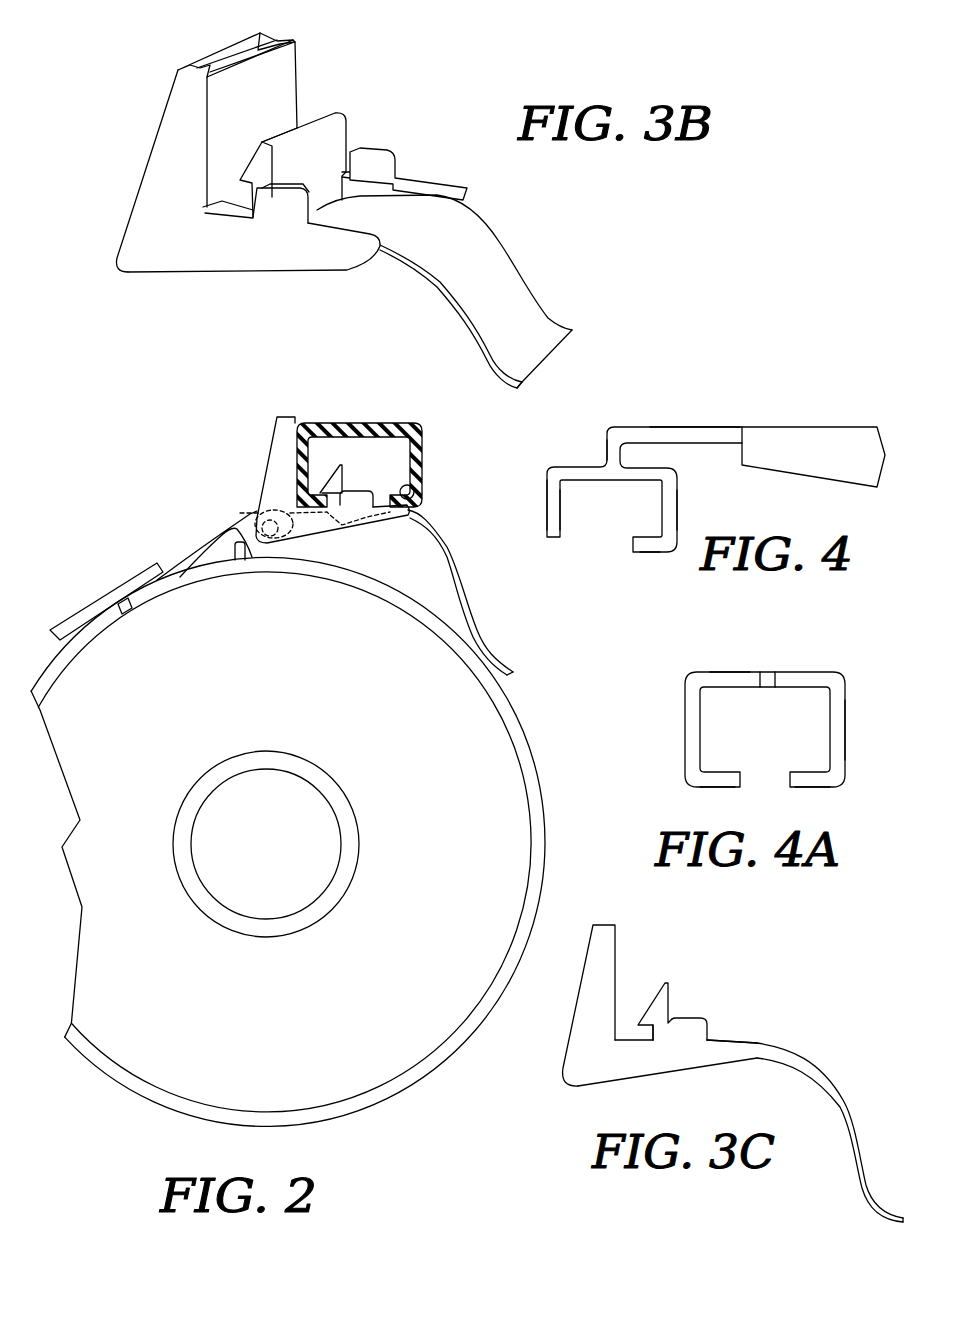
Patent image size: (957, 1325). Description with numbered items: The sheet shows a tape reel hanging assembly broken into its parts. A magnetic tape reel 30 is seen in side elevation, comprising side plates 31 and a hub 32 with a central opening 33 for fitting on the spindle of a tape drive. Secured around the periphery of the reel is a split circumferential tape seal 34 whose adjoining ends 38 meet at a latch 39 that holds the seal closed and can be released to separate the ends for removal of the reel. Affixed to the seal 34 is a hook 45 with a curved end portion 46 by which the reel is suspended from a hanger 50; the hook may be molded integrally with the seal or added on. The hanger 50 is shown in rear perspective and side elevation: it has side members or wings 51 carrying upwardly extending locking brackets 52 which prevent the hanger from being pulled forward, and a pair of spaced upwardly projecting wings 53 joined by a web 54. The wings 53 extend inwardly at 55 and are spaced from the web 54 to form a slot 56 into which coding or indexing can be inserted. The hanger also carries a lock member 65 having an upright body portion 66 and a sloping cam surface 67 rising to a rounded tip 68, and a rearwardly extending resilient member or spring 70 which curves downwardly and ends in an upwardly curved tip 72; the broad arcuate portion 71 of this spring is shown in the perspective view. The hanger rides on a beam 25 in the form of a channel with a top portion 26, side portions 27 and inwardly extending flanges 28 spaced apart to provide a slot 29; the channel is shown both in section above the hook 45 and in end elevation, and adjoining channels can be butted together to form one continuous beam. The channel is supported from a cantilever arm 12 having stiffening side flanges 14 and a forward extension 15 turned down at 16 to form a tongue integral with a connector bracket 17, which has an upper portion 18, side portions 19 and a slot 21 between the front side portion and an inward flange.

In FIG. 4, the cantilever arm 12 is at (798, 418).
In FIG. 4, the side flanges 14 is at (821, 467).
In FIG. 4, the forward extension 15 is at (663, 432).
In FIG. 4, the turned-down tongue 16 is at (607, 448).
In FIG. 4, the connector bracket 17 is at (682, 511).
In FIG. 4, the upper portion 18 is at (612, 472).
In FIG. 4, the side portions 19 is at (547, 503).
In FIG. 4, the slot 21 is at (632, 543).
In FIG. 2, the beam 25 is at (430, 432).
In FIG. 4A, the beam 25 is at (821, 664).
In FIG. 2, the top portion 26 is at (362, 423).
In FIG. 4A, the top portion 26 is at (730, 670).
In FIG. 2, the side portions 27 is at (423, 465).
In FIG. 4A, the side portions 27 is at (846, 728).
In FIG. 2, the inwardly extending flanges 28 is at (421, 487).
In FIG. 4A, the inwardly extending flanges 28 is at (813, 787).
In FIG. 2, the slot 29 is at (388, 500).
In FIG. 4A, the slot 29 is at (743, 783).
In FIG. 4A, the magnetic tape reel 30 is at (768, 687).
In FIG. 2, the side plates 31 is at (416, 950).
In FIG. 2, the hub 32 is at (358, 830).
In FIG. 2, the central opening 33 is at (324, 800).
In FIG. 2, the circumferential tape seal 34 is at (547, 906).
In FIG. 2, the adjoining ends 38 is at (123, 612).
In FIG. 2, the latch 39 is at (115, 590).
In FIG. 2, the hook 45 is at (188, 548).
In FIG. 2, the curved end portion 46 is at (288, 533).
In FIG. 3B, the hanger 50 is at (410, 146).
In FIG. 2, the hanger 50 is at (253, 447).
In FIG. 3C, the hanger 50 is at (729, 1016).
In FIG. 3B, the side members 51 is at (205, 256).
In FIG. 3C, the side members 51 is at (643, 1063).
In FIG. 3B, the locking brackets 52 is at (268, 226).
In FIG. 3C, the locking brackets 52 is at (690, 1020).
In FIG. 3B, the upwardly projecting wings 53 is at (178, 198).
In FIG. 3C, the upwardly projecting wings 53 is at (593, 998).
In FIG. 3B, the web 54 is at (236, 101).
In FIG. 3B, the inwardly extending portions of wings 55 is at (188, 64).
In FIG. 3B, the slot 56 is at (218, 64).
In FIG. 3B, the lock member 65 is at (352, 122).
In FIG. 3C, the lock member 65 is at (678, 977).
In FIG. 3B, the upright body portion 66 is at (318, 172).
In FIG. 3B, the sloping cam surface 67 is at (247, 180).
In FIG. 3C, the sloping cam surface 67 is at (647, 1010).
In FIG. 3B, the rounded tip 68 is at (299, 127).
In FIG. 3B, the resilient member 70 is at (520, 250).
In FIG. 2, the resilient member 70 is at (474, 583).
In FIG. 3C, the resilient member 70 is at (870, 1115).
In FIG. 3B, the arcuate portion 71 is at (398, 243).
In FIG. 3B, the upwardly curved tip 72 is at (556, 348).
In FIG. 2, the upwardly curved tip 72 is at (512, 665).
In FIG. 3C, the upwardly curved tip 72 is at (900, 1217).